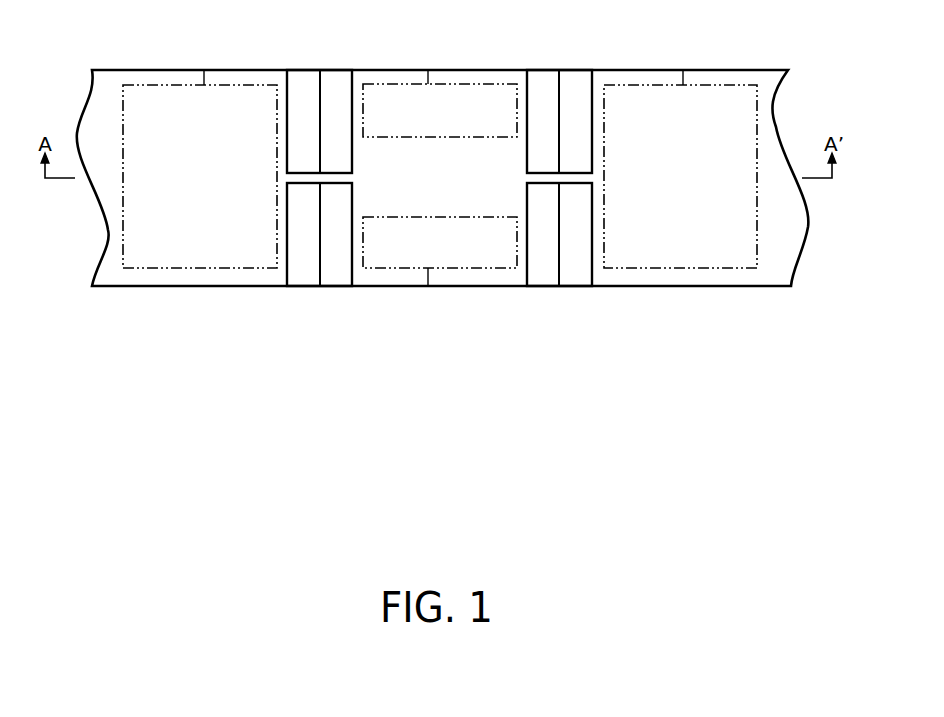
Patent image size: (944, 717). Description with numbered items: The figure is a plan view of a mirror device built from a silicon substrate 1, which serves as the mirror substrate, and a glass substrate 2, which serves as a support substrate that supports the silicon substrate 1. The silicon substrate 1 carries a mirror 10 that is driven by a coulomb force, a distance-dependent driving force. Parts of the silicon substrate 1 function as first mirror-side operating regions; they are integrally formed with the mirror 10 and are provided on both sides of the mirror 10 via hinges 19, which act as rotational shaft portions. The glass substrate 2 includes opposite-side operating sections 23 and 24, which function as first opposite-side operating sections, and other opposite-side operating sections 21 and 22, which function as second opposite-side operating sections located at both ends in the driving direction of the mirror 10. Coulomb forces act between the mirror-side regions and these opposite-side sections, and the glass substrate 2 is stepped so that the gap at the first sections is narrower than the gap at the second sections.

The silicon substrate 1 is at (768, 72).
The glass substrate 2 is at (577, 75).
The mirror 10 is at (460, 72).
The hinge 19 is at (328, 177).
The opposite-side operating section 21 is at (428, 286).
The opposite-side operating section 22 is at (428, 70).
The opposite-side operating section 23 is at (204, 70).
The opposite-side operating section 24 is at (683, 70).